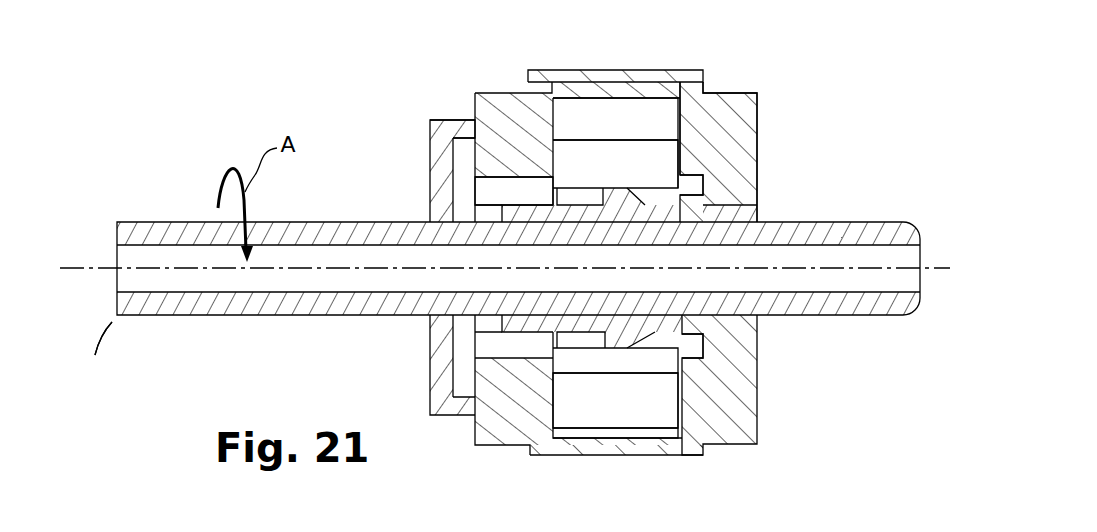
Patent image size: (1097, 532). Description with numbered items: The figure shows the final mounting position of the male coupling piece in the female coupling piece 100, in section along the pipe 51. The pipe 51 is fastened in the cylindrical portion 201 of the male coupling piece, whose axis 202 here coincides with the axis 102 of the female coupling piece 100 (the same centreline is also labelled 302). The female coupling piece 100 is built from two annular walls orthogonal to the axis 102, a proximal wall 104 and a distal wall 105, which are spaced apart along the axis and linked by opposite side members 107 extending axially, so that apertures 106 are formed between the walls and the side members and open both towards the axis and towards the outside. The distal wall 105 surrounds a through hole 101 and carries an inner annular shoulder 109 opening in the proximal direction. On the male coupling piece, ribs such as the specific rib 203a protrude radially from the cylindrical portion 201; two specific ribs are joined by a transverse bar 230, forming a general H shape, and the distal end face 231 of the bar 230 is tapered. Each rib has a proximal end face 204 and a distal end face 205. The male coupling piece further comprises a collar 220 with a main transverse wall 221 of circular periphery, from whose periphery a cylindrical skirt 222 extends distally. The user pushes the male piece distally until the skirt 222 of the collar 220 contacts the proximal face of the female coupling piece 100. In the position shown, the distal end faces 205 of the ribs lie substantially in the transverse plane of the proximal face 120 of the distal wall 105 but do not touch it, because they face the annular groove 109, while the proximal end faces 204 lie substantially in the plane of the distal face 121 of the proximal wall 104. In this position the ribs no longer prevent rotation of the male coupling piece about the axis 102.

The pipe 51 is at (167, 233).
The female coupling piece 100 is at (737, 78).
The through hole 101 is at (740, 211).
The axis 102 is at (112, 322).
The axis 202 is at (103, 338).
The rotor shaft 302 is at (103, 338).
The proximal wall 104 is at (552, 200).
The distal wall 105 is at (738, 100).
The apertures 106 is at (656, 156).
The side members 107 is at (692, 70).
The inner annular shoulder 109 is at (692, 345).
The proximal face 120 is at (667, 398).
The distal face 121 is at (557, 402).
The cylindrical portion 201 is at (521, 208).
The specific rib 203a is at (582, 195).
The proximal end face 204 is at (528, 128).
The distal end face 205 is at (683, 195).
The collar 220 is at (425, 367).
The main transverse wall 221 is at (437, 157).
The cylindrical skirt 222 is at (463, 127).
The transverse bar 230 is at (617, 195).
The distal end face 231 is at (642, 185).